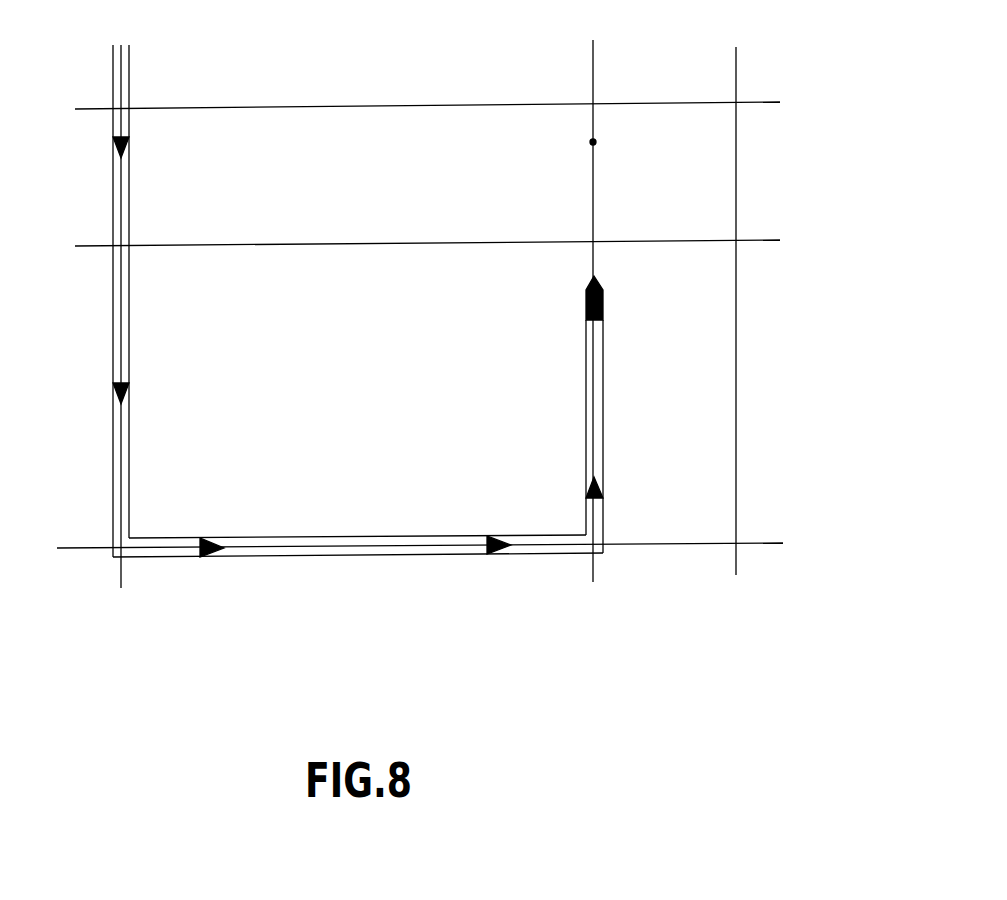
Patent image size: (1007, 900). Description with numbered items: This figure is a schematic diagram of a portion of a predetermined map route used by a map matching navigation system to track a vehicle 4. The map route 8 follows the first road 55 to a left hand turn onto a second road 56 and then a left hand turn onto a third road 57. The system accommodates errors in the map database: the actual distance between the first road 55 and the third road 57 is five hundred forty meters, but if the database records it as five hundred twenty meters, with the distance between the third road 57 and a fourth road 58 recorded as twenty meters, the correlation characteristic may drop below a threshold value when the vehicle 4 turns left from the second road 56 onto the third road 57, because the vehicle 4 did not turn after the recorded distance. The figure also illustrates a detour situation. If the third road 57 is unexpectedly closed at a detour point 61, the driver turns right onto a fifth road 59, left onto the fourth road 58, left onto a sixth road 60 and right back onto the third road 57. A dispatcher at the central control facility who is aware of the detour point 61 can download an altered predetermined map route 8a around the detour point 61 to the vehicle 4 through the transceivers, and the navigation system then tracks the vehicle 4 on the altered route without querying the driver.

The vehicle 4 is at (606, 312).
The map route 8 is at (123, 210).
The altered predetermined map route 8a is at (637, 101).
The first road 55 is at (118, 337).
The second road 56 is at (361, 552).
The third road 57 is at (601, 454).
The fourth road 58 is at (736, 360).
The fifth road 59 is at (300, 241).
The sixth road 60 is at (297, 105).
The detour point 61 is at (590, 141).